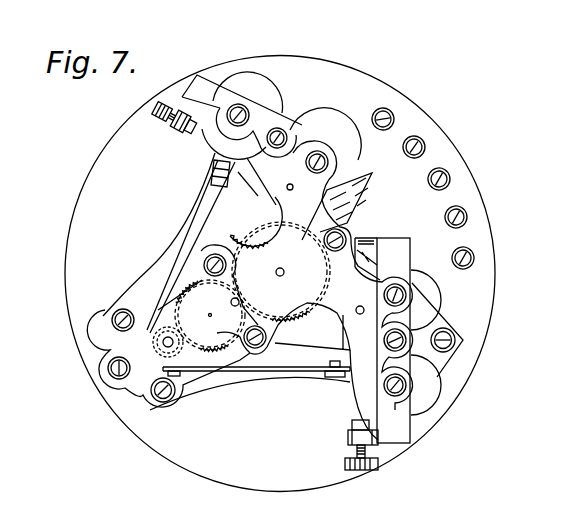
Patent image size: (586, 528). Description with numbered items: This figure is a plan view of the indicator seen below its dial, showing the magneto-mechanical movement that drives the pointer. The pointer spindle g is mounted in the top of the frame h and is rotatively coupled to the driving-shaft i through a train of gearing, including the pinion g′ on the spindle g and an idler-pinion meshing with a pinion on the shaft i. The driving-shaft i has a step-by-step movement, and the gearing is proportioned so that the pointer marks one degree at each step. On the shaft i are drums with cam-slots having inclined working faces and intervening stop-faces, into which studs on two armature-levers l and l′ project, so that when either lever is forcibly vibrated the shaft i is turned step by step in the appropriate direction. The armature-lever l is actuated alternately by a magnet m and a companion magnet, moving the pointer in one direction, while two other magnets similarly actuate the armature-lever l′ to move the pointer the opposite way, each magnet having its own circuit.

The armature-lever l′ is at (197, 228).
The pinion g′ is at (261, 241).
The spindle g is at (281, 272).
The frame h is at (315, 340).
The driving-shaft i is at (165, 343).
The armature-lever l is at (223, 372).
The magnet m is at (437, 342).